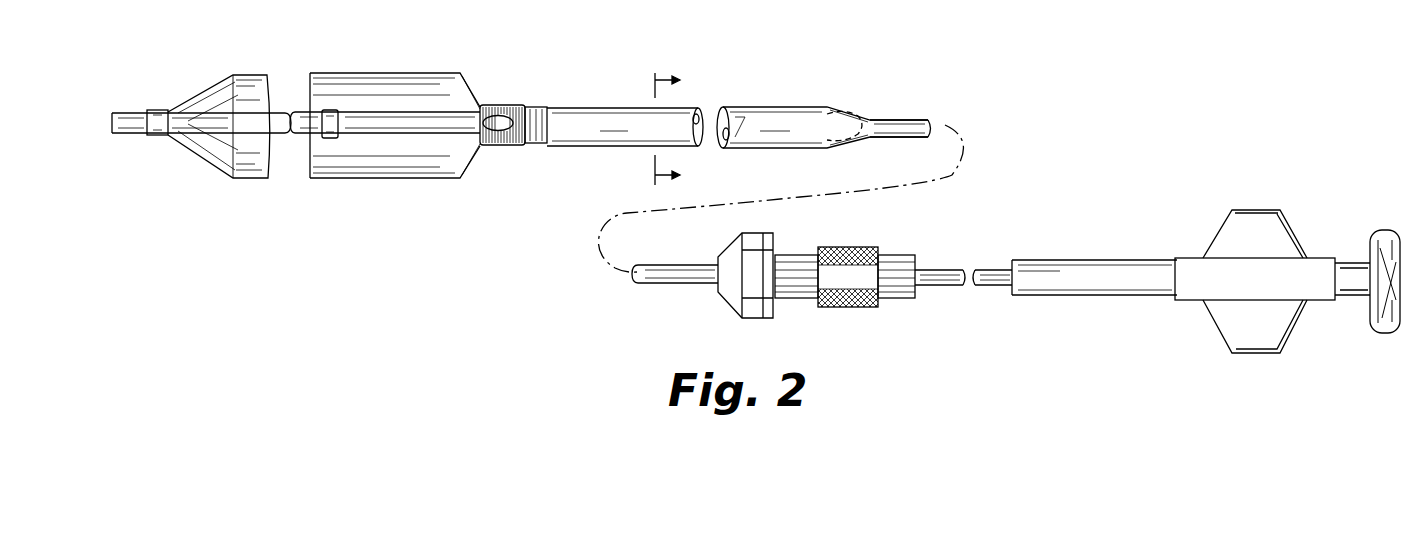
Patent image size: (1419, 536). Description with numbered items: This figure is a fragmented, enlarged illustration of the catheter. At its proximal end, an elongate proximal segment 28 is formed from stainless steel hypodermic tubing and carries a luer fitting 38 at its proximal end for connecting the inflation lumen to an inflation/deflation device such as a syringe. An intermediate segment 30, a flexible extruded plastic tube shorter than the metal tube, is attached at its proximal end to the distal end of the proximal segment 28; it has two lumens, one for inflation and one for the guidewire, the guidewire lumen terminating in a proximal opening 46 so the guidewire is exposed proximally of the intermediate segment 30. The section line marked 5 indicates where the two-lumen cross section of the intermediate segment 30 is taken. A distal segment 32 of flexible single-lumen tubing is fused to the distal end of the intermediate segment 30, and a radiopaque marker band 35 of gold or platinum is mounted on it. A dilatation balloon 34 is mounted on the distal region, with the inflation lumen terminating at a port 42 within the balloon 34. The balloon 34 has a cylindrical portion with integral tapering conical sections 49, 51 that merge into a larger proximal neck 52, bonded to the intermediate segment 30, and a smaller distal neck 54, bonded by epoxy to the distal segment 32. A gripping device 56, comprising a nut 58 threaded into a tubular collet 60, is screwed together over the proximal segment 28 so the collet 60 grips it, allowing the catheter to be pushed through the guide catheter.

The proximal segment 28 is at (897, 122).
The intermediate segment 30 is at (739, 127).
The distal segment 32 is at (392, 118).
The dilatation balloon 34 is at (404, 179).
The radiopaque marker band 35 is at (330, 140).
The luer fitting 38 is at (1225, 238).
The port 42 is at (503, 109).
The proximal opening 46 is at (848, 115).
The proximal conical section 49 is at (483, 174).
The distal conical section 51 is at (208, 170).
The proximal neck 52 is at (533, 148).
The distal neck 54 is at (161, 137).
The gripping device 56 is at (845, 268).
The nut 58 is at (772, 242).
The tubular collet 60 is at (833, 310).
The section line 5- 5 is at (655, 129).